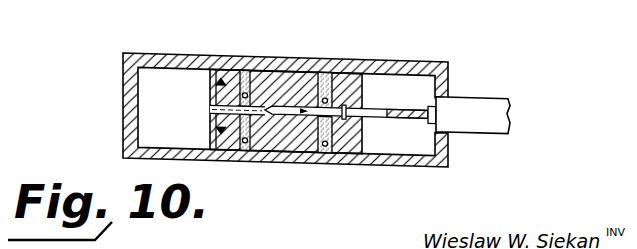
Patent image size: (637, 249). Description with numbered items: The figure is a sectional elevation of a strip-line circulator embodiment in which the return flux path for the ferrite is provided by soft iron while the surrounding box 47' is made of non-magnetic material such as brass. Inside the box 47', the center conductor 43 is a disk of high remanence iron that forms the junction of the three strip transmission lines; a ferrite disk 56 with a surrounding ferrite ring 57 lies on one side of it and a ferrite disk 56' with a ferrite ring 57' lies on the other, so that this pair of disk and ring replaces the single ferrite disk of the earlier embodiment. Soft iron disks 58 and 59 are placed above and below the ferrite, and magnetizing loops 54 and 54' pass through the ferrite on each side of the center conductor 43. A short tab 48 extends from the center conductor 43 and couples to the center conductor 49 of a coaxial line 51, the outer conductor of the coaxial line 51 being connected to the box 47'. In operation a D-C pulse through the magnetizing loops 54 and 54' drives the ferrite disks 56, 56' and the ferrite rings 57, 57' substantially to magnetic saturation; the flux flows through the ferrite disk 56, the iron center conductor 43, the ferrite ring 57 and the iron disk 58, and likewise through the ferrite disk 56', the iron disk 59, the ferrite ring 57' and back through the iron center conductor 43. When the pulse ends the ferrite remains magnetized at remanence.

The box 47' is at (257, 110).
The center conductor 43 is at (212, 105).
The tab 48 is at (374, 115).
The center conductor of coaxial line 49 is at (420, 106).
The coaxial line 51 is at (487, 100).
The magnetizing loop 54 is at (263, 64).
The magnetizing loop 54' is at (279, 160).
The ferrite disk 56 is at (286, 84).
The ferrite disk 56' is at (292, 161).
The ferrite ring 57 is at (194, 80).
The ferrite ring 57' is at (188, 132).
The soft iron disk 58 is at (280, 68).
The soft iron disk 59 is at (347, 165).